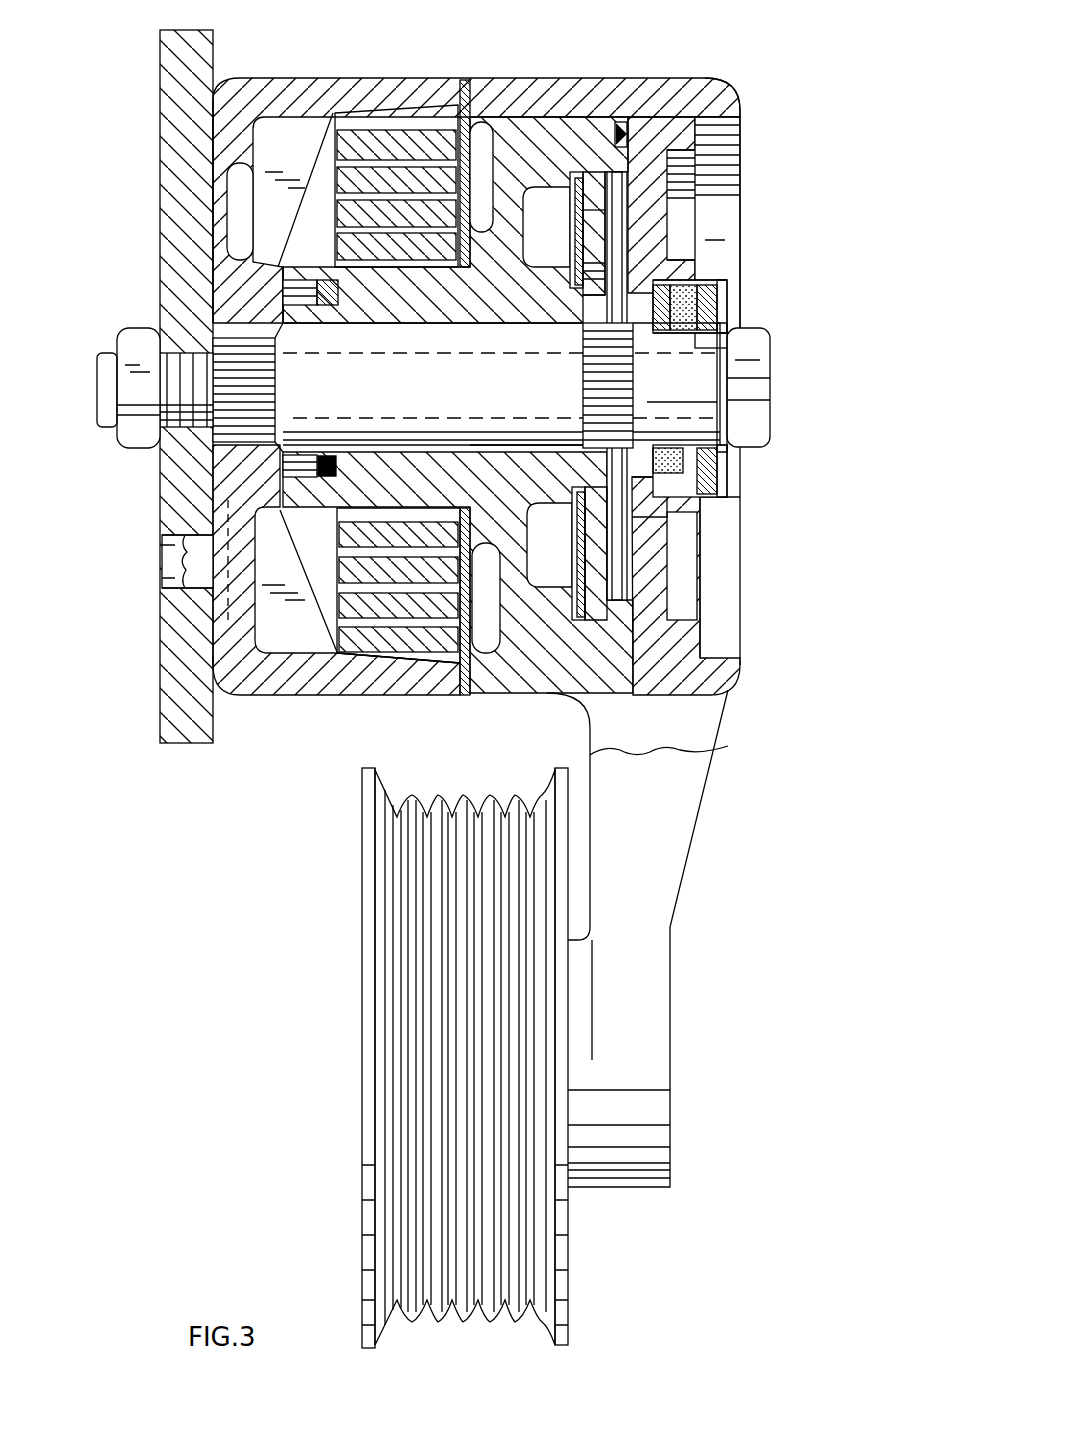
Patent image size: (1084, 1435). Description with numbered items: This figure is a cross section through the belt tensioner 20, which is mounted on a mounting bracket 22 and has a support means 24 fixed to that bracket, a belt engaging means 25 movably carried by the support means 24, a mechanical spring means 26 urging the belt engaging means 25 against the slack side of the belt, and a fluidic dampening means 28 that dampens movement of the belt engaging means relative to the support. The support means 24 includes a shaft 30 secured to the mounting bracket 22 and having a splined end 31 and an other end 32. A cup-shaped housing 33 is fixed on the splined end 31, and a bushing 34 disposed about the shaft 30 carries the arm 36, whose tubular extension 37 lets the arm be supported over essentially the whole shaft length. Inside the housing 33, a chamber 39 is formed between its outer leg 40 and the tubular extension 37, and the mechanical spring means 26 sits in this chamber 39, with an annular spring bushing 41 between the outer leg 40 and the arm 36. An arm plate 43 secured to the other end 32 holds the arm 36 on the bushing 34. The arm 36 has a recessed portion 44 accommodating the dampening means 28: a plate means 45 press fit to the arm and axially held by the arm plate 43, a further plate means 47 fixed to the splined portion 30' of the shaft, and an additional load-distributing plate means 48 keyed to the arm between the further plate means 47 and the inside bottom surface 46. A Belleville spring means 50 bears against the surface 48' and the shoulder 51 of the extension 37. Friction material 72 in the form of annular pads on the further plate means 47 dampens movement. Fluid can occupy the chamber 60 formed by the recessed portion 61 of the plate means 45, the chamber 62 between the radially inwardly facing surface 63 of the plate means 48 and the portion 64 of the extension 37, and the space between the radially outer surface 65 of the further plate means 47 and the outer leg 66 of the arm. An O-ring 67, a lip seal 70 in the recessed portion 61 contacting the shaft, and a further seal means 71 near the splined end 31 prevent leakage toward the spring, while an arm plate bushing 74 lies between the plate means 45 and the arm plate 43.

The belt tensioner 20 is at (797, 95).
The mounting bracket 22 is at (160, 178).
The support means 24 is at (322, 78).
The belt engaging means 25 is at (373, 993).
The mechanical spring means 26 is at (400, 128).
The fluidic dampening means 28 is at (712, 210).
The shaft 30 is at (458, 405).
The splined portion of the shaft 30' is at (586, 385).
The splined end of the shaft 31 is at (293, 438).
The other end of the shaft 32 is at (707, 380).
The housing 33 is at (222, 278).
The bushing 34 is at (383, 325).
The arm 36 is at (702, 800).
The tubular extension 37 is at (338, 306).
The chamber 39 is at (296, 618).
The outer leg of the housing 40 is at (440, 683).
The annular spring bushing 41 is at (493, 135).
The arm plate 43 is at (720, 297).
The recessed portion of the arm 44 is at (558, 558).
The plate means 45 is at (660, 540).
The inside bottom surface 46 is at (538, 186).
The further plate means 47 is at (697, 195).
The additional load-distributing plate means 48 is at (582, 162).
The surface of the additional plate means 48' is at (568, 251).
The spring means 50 is at (533, 507).
The shoulder 51 is at (580, 510).
The chamber 60 is at (638, 310).
The recessed portion of the plate means 61 is at (663, 490).
The chamber 62 is at (598, 498).
The radially inwardly facing surface 63 is at (600, 285).
The portion of the tubular extension 64 is at (650, 257).
The radially outer surface 65 is at (617, 172).
The outer leg of the arm 66 is at (700, 90).
The O-ring 67 is at (630, 130).
The lip seal 70 is at (690, 460).
The further seal means 71 is at (326, 462).
The friction material 72 is at (583, 543).
The arm plate bushing 74 is at (737, 305).